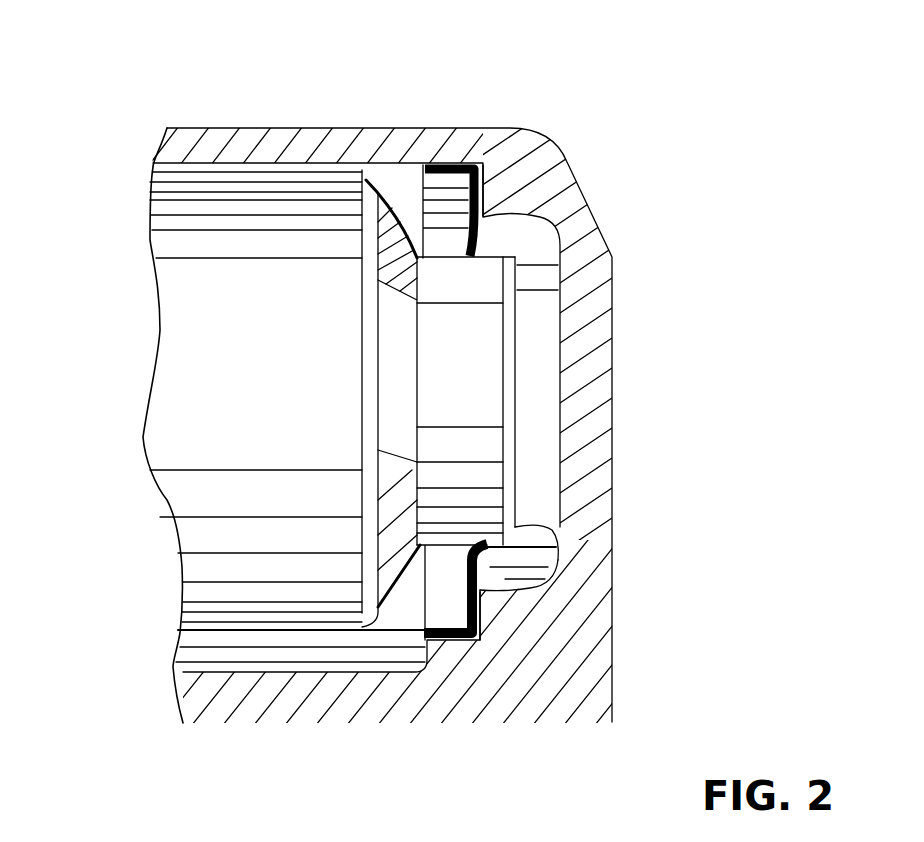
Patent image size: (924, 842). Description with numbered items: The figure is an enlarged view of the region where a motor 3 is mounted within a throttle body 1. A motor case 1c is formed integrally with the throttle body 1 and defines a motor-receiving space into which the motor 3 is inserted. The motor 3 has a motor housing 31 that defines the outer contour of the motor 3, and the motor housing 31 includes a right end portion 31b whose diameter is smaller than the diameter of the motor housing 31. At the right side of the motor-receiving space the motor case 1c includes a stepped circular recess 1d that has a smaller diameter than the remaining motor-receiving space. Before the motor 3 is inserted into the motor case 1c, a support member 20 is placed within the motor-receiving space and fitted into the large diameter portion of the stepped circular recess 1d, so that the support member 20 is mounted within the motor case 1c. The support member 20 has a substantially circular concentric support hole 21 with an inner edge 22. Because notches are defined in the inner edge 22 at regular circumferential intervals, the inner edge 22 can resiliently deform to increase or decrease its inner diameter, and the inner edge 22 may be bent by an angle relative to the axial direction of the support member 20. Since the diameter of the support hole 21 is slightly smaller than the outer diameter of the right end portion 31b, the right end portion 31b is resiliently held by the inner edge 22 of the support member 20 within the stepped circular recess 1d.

The throttle body 1 is at (542, 122).
The motor case 1c is at (311, 148).
The stepped circular recess 1d is at (485, 168).
The motor 3 is at (220, 582).
The motor housing 31 is at (180, 447).
The right end portion 31b is at (480, 323).
The support member 20 is at (483, 590).
The support hole 21 is at (557, 538).
The inner edge 22 is at (545, 562).